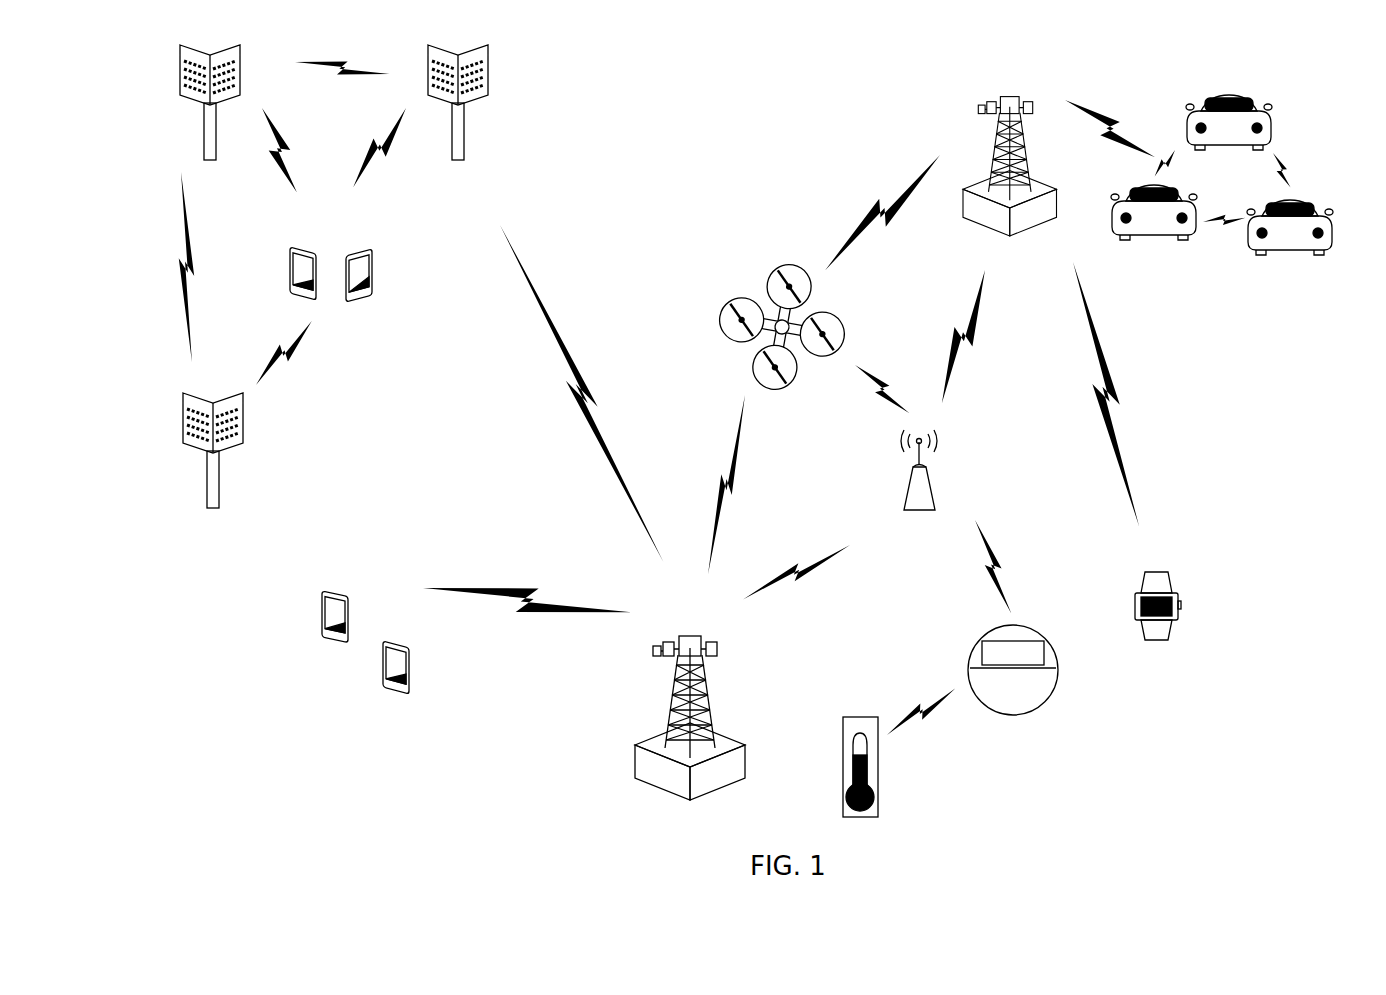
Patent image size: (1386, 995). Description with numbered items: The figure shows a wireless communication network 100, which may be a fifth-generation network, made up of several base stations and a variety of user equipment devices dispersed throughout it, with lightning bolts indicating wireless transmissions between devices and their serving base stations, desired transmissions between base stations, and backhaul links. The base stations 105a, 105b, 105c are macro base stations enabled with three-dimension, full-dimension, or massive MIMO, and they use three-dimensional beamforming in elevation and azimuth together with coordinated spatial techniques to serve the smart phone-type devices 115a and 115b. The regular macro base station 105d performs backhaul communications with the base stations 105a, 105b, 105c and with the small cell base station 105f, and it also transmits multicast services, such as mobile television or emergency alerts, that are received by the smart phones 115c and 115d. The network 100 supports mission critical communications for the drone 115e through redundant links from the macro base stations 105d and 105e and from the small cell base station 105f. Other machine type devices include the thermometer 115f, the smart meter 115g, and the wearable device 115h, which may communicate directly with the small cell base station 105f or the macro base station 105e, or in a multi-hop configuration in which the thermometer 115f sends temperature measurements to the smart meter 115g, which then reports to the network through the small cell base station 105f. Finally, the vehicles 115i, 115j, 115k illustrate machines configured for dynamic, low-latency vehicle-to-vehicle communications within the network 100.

The wireless communication network 100 is at (739, 444).
The base station 105a is at (204, 140).
The base station 105b is at (466, 140).
The base station 105c is at (206, 503).
The macro base station 105d is at (655, 788).
The macro base station 105e is at (967, 233).
The small cell base station 105f is at (904, 508).
The user equipment 115a is at (291, 250).
The user equipment 115b is at (373, 252).
The user equipment 115c is at (321, 591).
The user equipment 115d is at (409, 652).
The user equipment 115e is at (720, 331).
The user equipment 115f is at (879, 805).
The user equipment 115g is at (1032, 710).
The user equipment 115h is at (1170, 640).
The user equipment 115i is at (1246, 98).
The user equipment 115j is at (1309, 251).
The user equipment 115k is at (1133, 243).